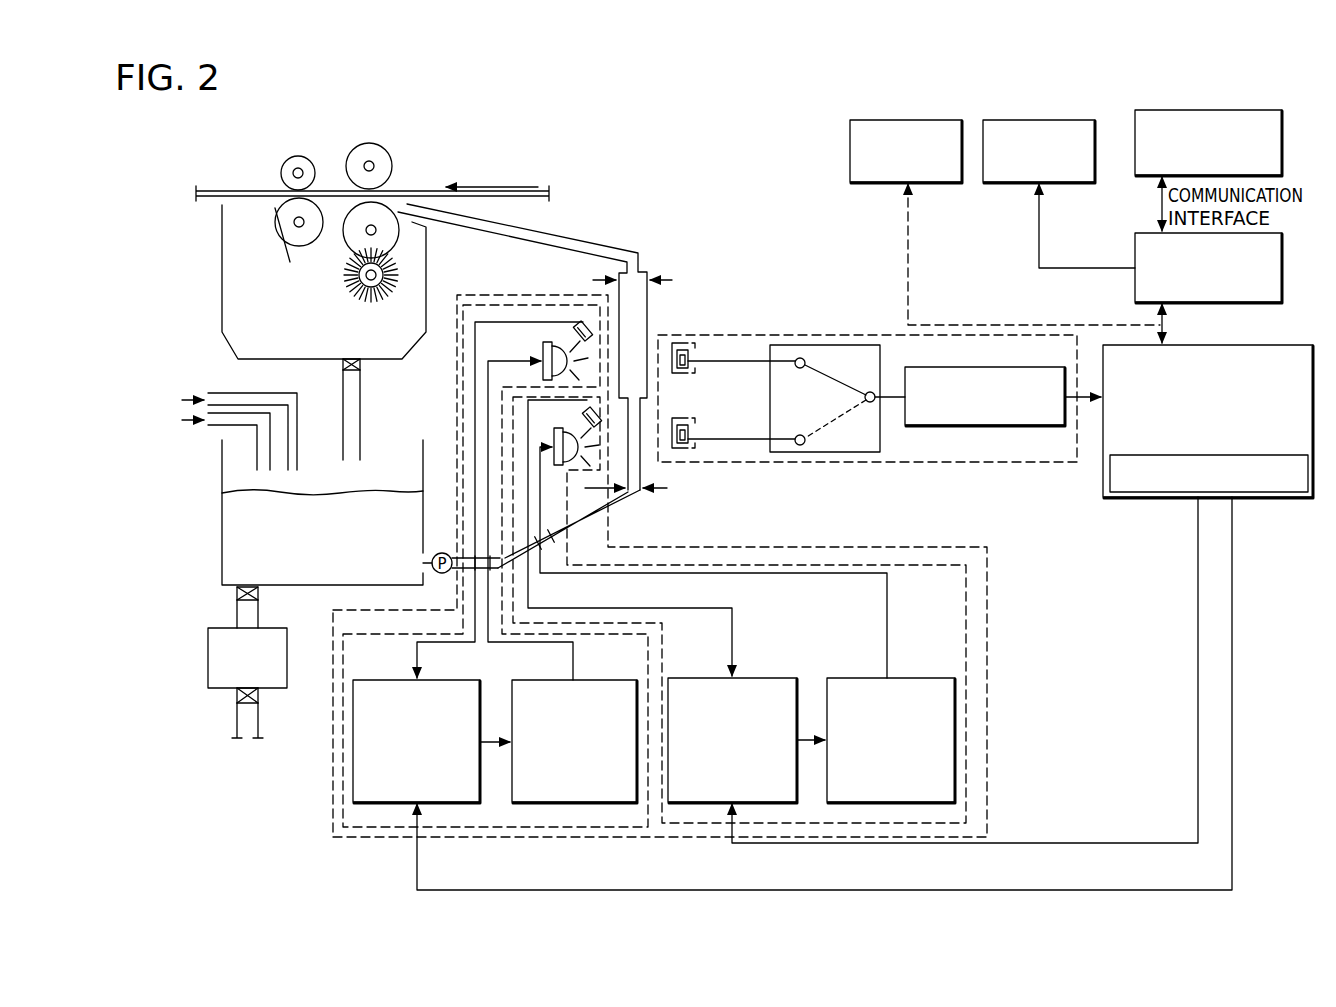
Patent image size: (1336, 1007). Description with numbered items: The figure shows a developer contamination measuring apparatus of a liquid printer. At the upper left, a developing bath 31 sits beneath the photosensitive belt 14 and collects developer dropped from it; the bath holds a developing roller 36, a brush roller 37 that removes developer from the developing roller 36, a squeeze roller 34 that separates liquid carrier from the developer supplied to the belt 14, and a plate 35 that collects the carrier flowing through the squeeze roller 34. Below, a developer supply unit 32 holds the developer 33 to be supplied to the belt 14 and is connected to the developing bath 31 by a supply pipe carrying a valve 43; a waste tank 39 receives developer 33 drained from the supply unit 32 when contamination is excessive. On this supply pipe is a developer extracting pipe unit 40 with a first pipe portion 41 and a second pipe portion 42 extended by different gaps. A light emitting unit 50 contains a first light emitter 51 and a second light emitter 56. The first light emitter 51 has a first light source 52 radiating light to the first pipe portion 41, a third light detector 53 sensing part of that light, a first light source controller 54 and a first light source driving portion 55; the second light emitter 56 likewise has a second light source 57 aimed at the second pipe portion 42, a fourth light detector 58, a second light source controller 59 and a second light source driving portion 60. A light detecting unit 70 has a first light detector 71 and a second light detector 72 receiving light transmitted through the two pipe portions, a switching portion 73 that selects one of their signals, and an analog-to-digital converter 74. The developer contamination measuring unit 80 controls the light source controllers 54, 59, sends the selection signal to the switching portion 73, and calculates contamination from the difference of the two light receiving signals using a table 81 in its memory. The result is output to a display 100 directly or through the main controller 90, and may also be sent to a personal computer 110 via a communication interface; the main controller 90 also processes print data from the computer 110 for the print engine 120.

The photosensitive belt 14 is at (538, 190).
The developing bath 31 is at (387, 360).
The developer supply unit 32 is at (222, 493).
The developer 33 is at (338, 563).
The squeeze roller 34 is at (285, 212).
The plate 35 is at (288, 255).
The developing roller 36 is at (383, 210).
The brush roller 37 is at (393, 267).
The waste tank 39 is at (218, 688).
The developer extracting pipe unit 40 is at (566, 349).
The first pipe portion 41 is at (650, 323).
The second pipe portion 42 is at (641, 463).
The valve 43 is at (343, 365).
The light emitting unit 50 is at (988, 578).
The first light emitter 51 is at (342, 808).
The first light source 52 is at (547, 342).
The third light detector 53 is at (580, 323).
The first light source controller 54 is at (393, 803).
The first light source driving portion 55 is at (548, 803).
The second light emitter 56 is at (967, 810).
The second light source 57 is at (552, 433).
The fourth light detector 58 is at (585, 416).
The second light source controller 59 is at (693, 803).
The second light source driving portion 60 is at (888, 803).
The light detecting unit 70 is at (869, 436).
The first light detector 71 is at (695, 370).
The second light detector 72 is at (697, 428).
The switching portion 73 is at (820, 452).
The analog-to-digital converter 74 is at (993, 426).
The developer contamination measuring unit 80 is at (1208, 448).
The table 81 is at (1273, 492).
The main controller 90 is at (1135, 288).
The display 100 is at (910, 118).
The personal computer 110 is at (1213, 109).
The print engine 120 is at (1033, 118).